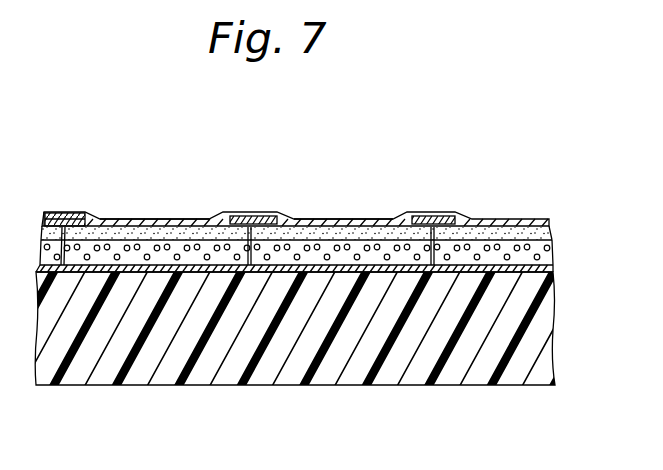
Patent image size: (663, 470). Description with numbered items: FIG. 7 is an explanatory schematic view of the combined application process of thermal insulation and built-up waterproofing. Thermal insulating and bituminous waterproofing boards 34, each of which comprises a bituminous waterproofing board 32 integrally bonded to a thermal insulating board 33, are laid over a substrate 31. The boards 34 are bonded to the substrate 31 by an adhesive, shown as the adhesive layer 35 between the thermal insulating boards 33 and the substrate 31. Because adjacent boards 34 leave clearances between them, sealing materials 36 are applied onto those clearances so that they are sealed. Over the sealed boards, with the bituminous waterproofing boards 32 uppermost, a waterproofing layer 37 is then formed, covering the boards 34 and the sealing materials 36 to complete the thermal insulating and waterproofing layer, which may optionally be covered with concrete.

The substrate 31 is at (542, 332).
The bituminous waterproofing board 32 is at (532, 220).
The thermal insulating board 33 is at (553, 246).
The thermal insulating and bituminous waterproofing board 34 is at (155, 217).
The adhesive layer 35 is at (556, 269).
The sealing material 36 is at (255, 216).
The waterproofing layer 37 is at (348, 218).